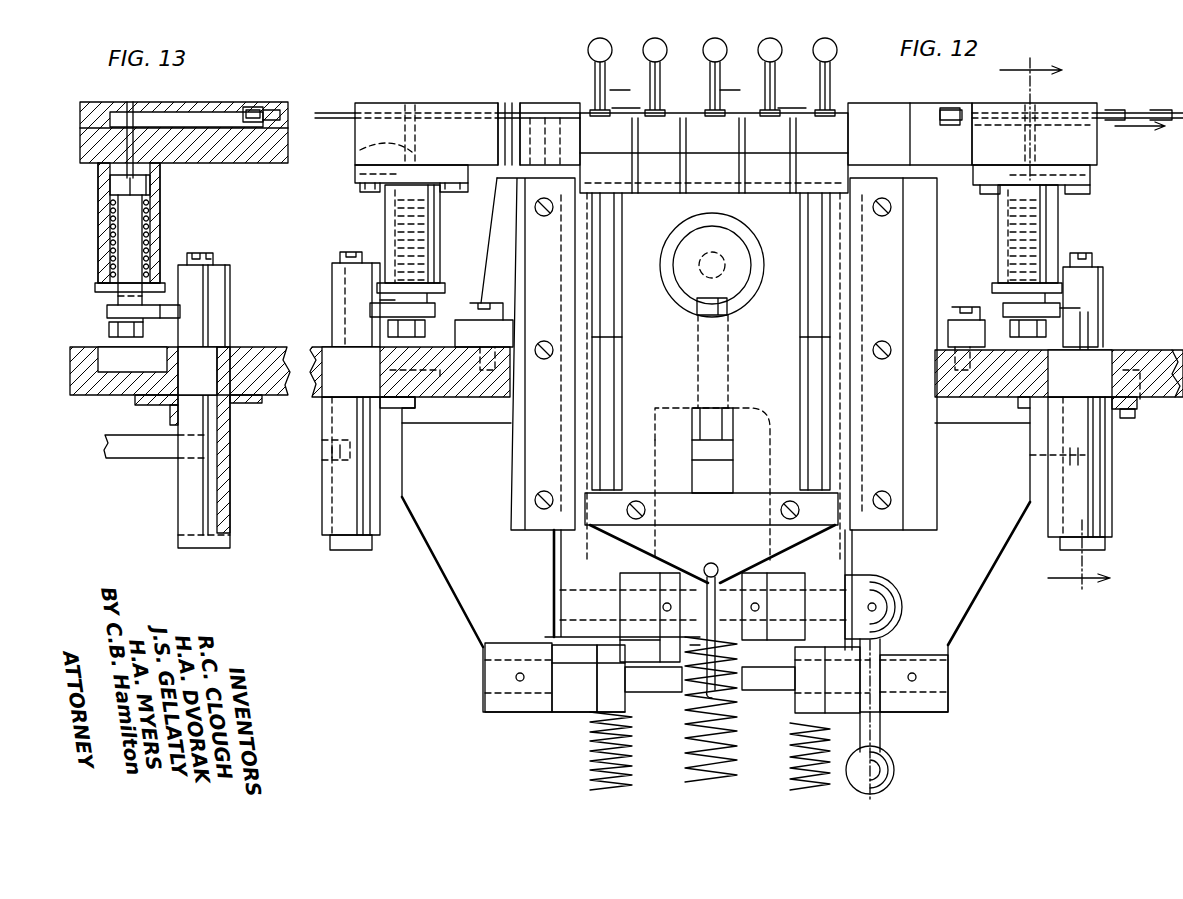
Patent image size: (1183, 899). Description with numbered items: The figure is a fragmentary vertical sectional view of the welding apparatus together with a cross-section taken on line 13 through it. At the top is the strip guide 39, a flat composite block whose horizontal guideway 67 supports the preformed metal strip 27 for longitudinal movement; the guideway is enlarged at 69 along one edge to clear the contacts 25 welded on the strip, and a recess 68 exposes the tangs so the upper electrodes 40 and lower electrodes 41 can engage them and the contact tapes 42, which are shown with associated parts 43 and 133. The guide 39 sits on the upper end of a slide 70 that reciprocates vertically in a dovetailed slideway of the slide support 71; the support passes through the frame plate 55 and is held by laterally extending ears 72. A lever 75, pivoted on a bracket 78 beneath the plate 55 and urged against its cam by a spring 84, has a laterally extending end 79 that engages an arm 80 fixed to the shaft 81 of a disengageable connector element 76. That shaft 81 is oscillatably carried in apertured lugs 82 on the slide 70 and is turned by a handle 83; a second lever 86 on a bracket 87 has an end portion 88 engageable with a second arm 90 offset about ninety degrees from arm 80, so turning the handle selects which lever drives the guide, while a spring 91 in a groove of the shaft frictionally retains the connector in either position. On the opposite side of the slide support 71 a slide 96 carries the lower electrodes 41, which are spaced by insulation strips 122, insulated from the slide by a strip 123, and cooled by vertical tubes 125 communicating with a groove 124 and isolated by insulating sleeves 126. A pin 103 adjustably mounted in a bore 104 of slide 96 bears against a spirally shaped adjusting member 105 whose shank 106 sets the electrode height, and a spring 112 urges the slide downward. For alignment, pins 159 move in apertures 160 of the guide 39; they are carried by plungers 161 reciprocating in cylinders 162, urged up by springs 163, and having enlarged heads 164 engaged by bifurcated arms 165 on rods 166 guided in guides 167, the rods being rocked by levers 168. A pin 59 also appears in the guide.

In FIG. 12, the section line 13 is at (1082, 326).
In FIG. 12, the contacts 25 is at (890, 113).
In FIG. 13, the preformed metal strip 27 is at (242, 108).
In FIG. 12, the preformed metal strip 27 is at (1150, 113).
In FIG. 13, the strip guide 39 is at (225, 97).
In FIG. 12, the strip guide 39 is at (380, 103).
In FIG. 12, the upper electrodes 40 is at (835, 80).
In FIG. 12, the lower electrodes 41 is at (580, 138).
In FIG. 12, the contact tapes 42 is at (655, 84).
In FIG. 12, the key foot 43 is at (648, 110).
In FIG. 13, the frame plate 55 is at (262, 395).
In FIG. 12, the frame plate 55 is at (445, 397).
In FIG. 12, the pin 59 is at (420, 130).
In FIG. 13, the guideway 67 is at (178, 120).
In FIG. 12, the recess 68 is at (535, 103).
In FIG. 13, the enlargement of guideway 69 is at (258, 106).
In FIG. 12, the enlargement of guideway 69 is at (945, 108).
In FIG. 12, the slide 70 is at (556, 574).
In FIG. 12, the slide support 71 is at (513, 496).
In FIG. 12, the ears 72 is at (512, 310).
In FIG. 12, the lever 75 is at (585, 690).
In FIG. 12, the disengageable connector element 76 is at (913, 583).
In FIG. 12, the bracket 78 is at (455, 590).
In FIG. 12, the laterally extending end 79 is at (650, 686).
In FIG. 12, the arm 80 is at (650, 635).
In FIG. 12, the shaft 81 is at (690, 565).
In FIG. 12, the apertured lugs 82 is at (620, 580).
In FIG. 12, the handle 83 is at (888, 732).
In FIG. 12, the spring 84 is at (590, 770).
In FIG. 12, the lever 86 is at (800, 715).
In FIG. 12, the bracket 87 is at (975, 574).
In FIG. 12, the laterally directed end portion 88 is at (765, 690).
In FIG. 12, the arm 90 is at (748, 640).
In FIG. 12, the spring 91 is at (688, 783).
In FIG. 12, the slide 96 is at (895, 410).
In FIG. 12, the pin 103 is at (695, 418).
In FIG. 12, the bore 104 is at (695, 356).
In FIG. 12, the spirally shaped adjusting member 105 is at (740, 300).
In FIG. 12, the shank 106 is at (745, 288).
In FIG. 12, the spring 112 is at (720, 585).
In FIG. 12, the strips of insulation 122 is at (752, 118).
In FIG. 12, the strip of insulation 123 is at (766, 190).
In FIG. 12, the groove 124 is at (670, 193).
In FIG. 12, the vertical tubes 125 is at (612, 240).
In FIG. 12, the sleeves of insulation 126 is at (622, 352).
In FIG. 12, the knob shank 133 is at (795, 56).
In FIG. 13, the aligning pins 159 is at (110, 112).
In FIG. 12, the aligning pins 159 is at (1040, 120).
In FIG. 13, the apertures 160 is at (133, 150).
In FIG. 12, the apertures 160 is at (360, 150).
In FIG. 13, the plungers 161 is at (110, 203).
In FIG. 12, the plungers 161 is at (358, 176).
In FIG. 13, the cylinders 162 is at (150, 190).
In FIG. 12, the cylinders 162 is at (385, 198).
In FIG. 13, the springs 163 is at (160, 220).
In FIG. 12, the springs 163 is at (390, 224).
In FIG. 13, the enlarged heads 164 is at (104, 322).
In FIG. 12, the enlarged heads 164 is at (460, 316).
In FIG. 13, the bifurcated arms 165 is at (165, 305).
In FIG. 12, the bifurcated arms 165 is at (410, 298).
In FIG. 13, the rods 166 is at (205, 342).
In FIG. 12, the rods 166 is at (340, 330).
In FIG. 13, the guides 167 is at (250, 500).
In FIG. 12, the guides 167 is at (322, 510).
In FIG. 13, the levers 168 is at (138, 460).
In FIG. 12, the levers 168 is at (322, 457).